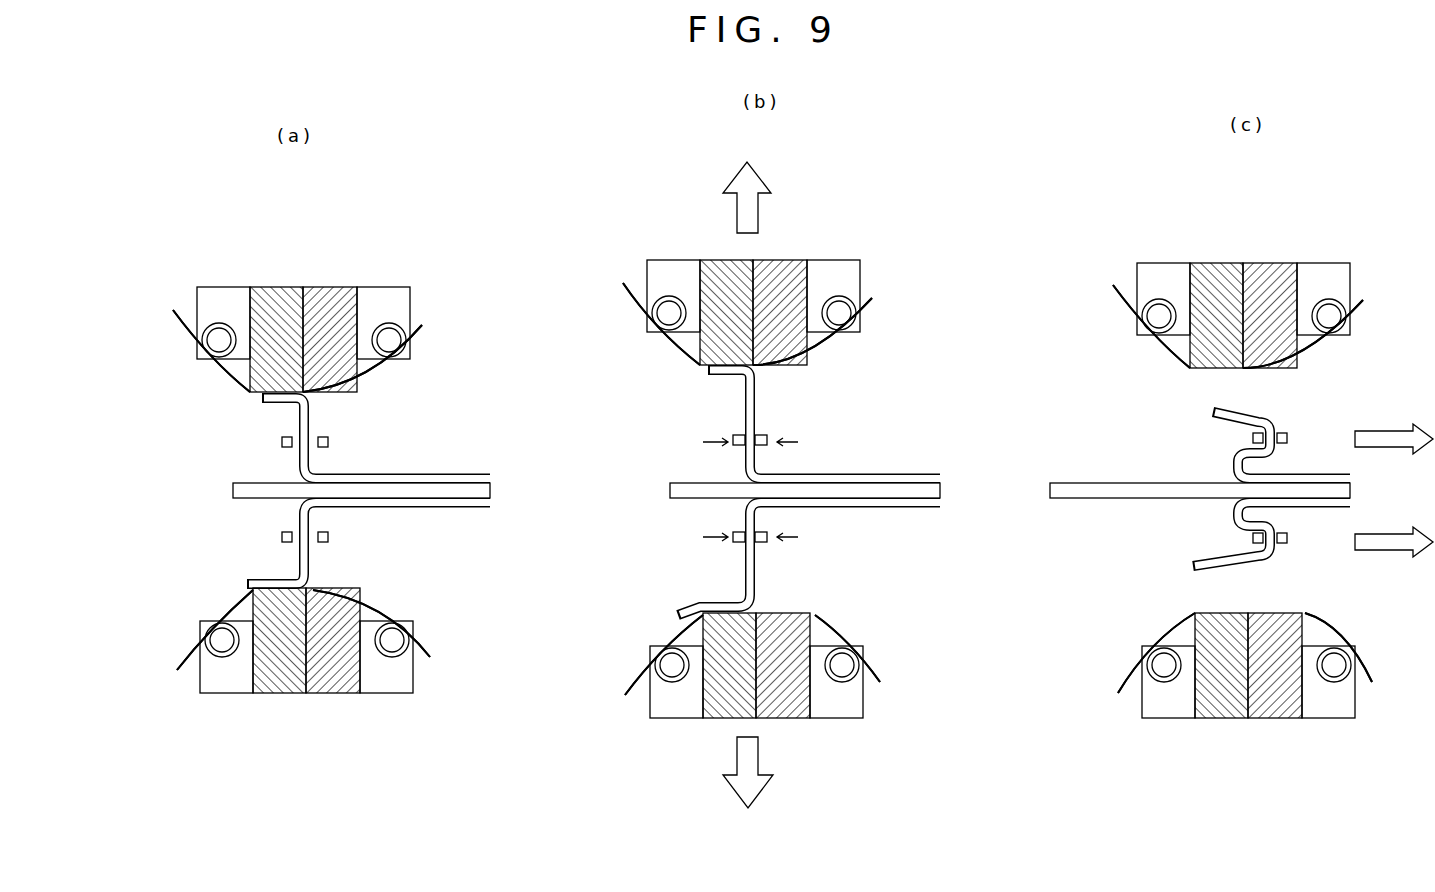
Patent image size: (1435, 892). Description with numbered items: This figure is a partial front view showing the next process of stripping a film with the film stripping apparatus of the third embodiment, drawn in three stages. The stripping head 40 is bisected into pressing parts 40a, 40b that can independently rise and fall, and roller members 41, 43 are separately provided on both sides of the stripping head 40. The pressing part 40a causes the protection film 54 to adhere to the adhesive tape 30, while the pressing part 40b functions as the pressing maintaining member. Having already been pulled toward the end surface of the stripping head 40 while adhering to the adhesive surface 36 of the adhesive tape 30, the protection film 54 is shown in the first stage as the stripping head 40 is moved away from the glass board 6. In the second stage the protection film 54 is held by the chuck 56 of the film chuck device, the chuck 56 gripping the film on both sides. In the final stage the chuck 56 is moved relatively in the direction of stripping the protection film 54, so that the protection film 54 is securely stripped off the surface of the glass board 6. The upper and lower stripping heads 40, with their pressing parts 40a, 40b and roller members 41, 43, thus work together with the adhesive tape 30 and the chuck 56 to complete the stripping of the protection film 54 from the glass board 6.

The glass board 6 is at (480, 490).
The adhesive tape 30 is at (182, 318).
The adhesive surface 36 is at (222, 377).
The stripping head 40 is at (794, 510).
The pressing part 40a is at (277, 287).
The pressing part 40b is at (347, 287).
The roller member 41 is at (208, 287).
The roller member 43 is at (390, 287).
The protection film 54 is at (453, 476).
The chuck 56 is at (282, 440).